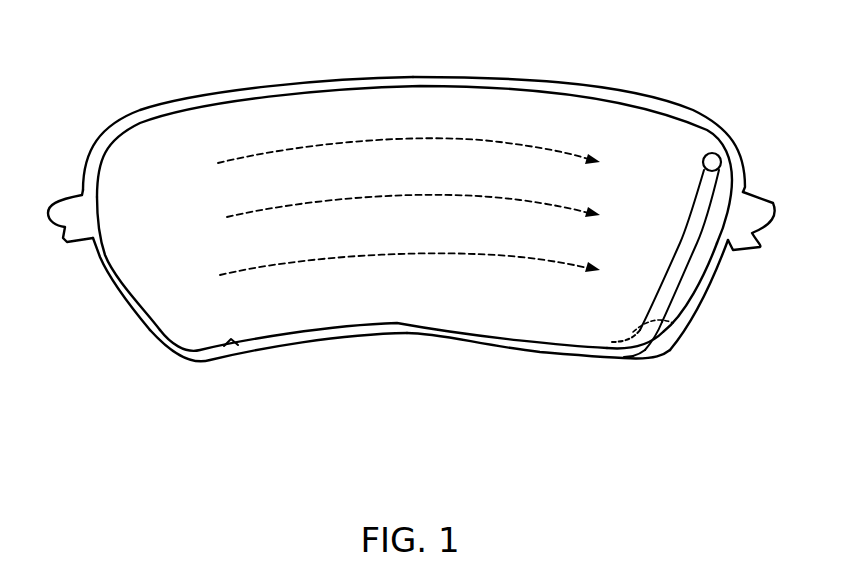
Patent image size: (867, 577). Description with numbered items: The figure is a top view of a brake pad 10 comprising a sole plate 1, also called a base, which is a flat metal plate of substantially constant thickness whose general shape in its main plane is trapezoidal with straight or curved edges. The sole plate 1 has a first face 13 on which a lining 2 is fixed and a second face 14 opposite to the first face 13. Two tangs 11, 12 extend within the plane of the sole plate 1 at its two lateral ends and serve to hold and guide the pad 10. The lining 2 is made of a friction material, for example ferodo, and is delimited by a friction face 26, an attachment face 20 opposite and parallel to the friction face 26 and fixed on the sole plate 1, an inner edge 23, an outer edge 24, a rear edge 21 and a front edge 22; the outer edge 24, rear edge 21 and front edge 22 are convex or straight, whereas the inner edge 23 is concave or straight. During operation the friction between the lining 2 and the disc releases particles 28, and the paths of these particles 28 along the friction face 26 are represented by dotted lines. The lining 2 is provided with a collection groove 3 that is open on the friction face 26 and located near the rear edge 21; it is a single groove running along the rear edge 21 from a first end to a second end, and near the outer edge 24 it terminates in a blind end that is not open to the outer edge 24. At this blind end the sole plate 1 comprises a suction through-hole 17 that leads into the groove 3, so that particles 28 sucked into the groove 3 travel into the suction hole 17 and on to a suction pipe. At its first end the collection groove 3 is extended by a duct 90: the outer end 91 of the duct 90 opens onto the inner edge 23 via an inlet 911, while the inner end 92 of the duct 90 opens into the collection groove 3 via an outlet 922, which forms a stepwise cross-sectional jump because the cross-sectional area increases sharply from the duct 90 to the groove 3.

The brake pad 10 is at (158, 62).
The sole plate 1 is at (413, 335).
The lining 2 is at (632, 133).
The collection groove 3 is at (693, 237).
The tang 11 is at (743, 190).
The tang 12 is at (72, 213).
The first face 13 is at (230, 343).
The second face 14 is at (513, 350).
The suction through-hole 17 is at (710, 153).
The attachment face 20 is at (503, 118).
The rear edge 21 is at (697, 290).
The front edge 22 is at (120, 293).
The inner edge 23 is at (350, 330).
The outer edge 24 is at (457, 85).
The friction face 26 is at (290, 175).
The particles 28 is at (467, 193).
The duct 90 is at (613, 337).
The outer end 91 is at (640, 353).
The inner end 92 is at (637, 335).
The inlet 911 is at (633, 353).
The outlet 922 is at (673, 323).